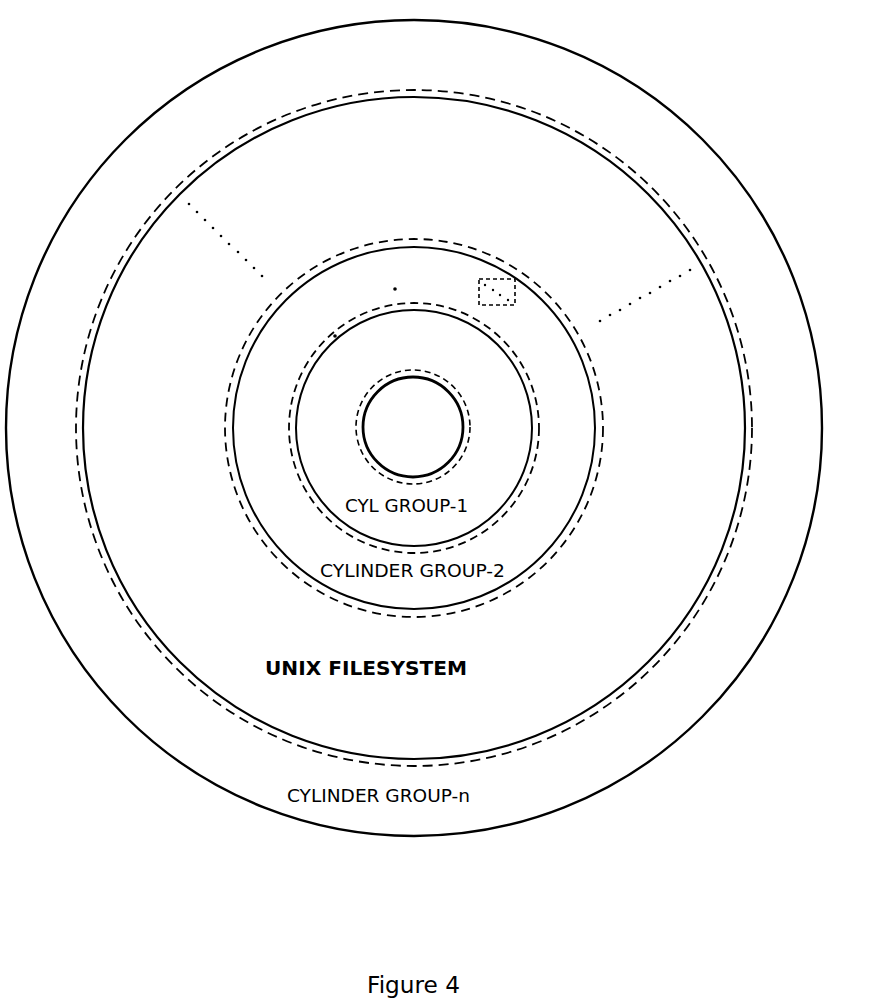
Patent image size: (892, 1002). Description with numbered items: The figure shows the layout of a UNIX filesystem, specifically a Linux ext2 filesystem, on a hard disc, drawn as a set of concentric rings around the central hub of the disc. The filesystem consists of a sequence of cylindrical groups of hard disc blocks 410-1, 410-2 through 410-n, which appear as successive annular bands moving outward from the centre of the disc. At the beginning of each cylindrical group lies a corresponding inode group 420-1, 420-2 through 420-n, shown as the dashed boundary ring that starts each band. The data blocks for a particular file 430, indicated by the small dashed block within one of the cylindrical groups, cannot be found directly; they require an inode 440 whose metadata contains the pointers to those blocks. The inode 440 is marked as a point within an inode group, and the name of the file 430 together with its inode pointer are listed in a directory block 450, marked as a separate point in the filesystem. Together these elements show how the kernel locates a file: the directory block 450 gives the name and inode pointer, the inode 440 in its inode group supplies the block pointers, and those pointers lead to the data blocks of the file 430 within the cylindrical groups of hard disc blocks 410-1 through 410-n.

The cylindrical group of hard disc blocks 410-n is at (752, 276).
The inode group 420-n is at (79, 490).
The cylindrical group of hard disc blocks 410-2 is at (560, 372).
The inode group 420-2 is at (292, 403).
The cylindrical group of hard disc blocks 410-1 is at (497, 432).
The inode group 420-1 is at (365, 400).
The file 430 is at (502, 280).
The inode 440 is at (330, 330).
The directory block 450 is at (388, 285).